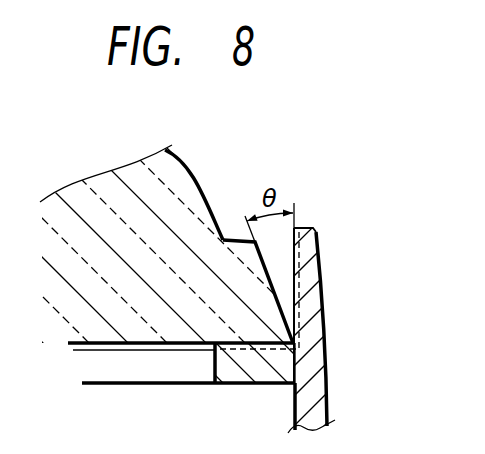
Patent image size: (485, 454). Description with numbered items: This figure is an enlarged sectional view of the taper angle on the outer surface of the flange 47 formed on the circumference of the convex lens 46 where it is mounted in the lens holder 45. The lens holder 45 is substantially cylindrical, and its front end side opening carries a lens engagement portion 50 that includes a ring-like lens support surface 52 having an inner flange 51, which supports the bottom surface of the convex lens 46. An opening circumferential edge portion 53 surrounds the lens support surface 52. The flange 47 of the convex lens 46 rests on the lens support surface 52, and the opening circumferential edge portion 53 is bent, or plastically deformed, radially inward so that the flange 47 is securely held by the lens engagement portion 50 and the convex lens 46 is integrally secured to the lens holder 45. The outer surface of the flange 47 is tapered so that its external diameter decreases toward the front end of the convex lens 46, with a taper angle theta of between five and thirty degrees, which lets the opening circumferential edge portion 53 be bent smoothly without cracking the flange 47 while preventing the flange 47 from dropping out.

The lens holder 45 is at (342, 227).
The convex lens 46 is at (191, 164).
The flange 47 is at (300, 243).
The lens engagement portion 50 is at (242, 227).
The inner flange 51 is at (243, 385).
The lens support surface 52 is at (266, 343).
The opening circumferential edge portion 53 is at (300, 270).